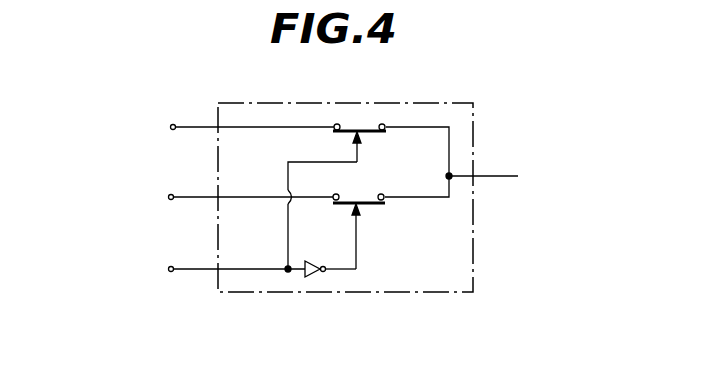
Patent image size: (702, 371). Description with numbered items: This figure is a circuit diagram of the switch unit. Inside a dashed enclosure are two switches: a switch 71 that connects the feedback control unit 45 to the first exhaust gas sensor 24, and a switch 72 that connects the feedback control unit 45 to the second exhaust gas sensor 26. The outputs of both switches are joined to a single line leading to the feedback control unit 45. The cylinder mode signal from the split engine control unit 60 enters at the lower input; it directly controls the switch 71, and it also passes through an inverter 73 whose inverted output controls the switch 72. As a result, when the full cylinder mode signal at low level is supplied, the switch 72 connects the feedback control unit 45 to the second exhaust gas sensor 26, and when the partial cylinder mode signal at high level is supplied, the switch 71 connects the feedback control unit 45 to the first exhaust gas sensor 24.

The first exhaust gas sensor 24 is at (203, 130).
The second exhaust gas sensor 26 is at (203, 198).
The split engine control unit 60 is at (190, 270).
The feedback control unit 45 is at (517, 177).
The switch 71 is at (364, 124).
The switch 72 is at (355, 200).
The inverter 73 is at (317, 277).